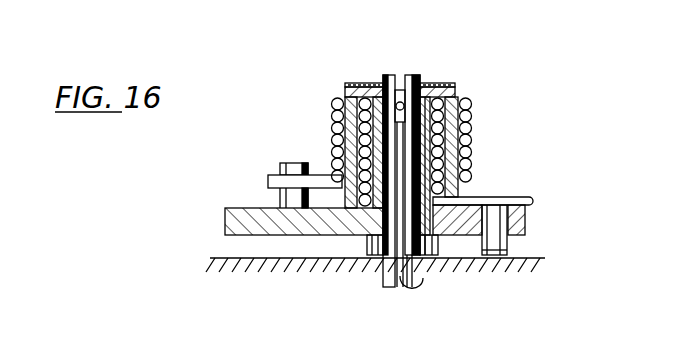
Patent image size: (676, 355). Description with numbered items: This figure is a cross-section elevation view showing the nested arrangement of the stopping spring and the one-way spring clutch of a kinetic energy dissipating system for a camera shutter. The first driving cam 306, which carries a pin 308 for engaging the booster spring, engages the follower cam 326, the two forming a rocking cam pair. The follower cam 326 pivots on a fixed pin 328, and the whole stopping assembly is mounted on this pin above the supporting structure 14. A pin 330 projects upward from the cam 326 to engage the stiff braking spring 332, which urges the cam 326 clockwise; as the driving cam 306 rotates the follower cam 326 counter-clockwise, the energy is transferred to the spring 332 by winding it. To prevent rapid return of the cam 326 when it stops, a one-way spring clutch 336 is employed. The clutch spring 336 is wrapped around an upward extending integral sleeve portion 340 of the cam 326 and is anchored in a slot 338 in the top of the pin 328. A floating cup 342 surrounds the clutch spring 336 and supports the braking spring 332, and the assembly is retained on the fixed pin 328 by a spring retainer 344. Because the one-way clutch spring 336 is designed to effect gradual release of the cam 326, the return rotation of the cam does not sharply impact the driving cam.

The panel 14 is at (222, 265).
The first driving cam 306 is at (523, 220).
The pin 308 is at (508, 240).
The follower cam 326 is at (237, 220).
The fixed pin 328 is at (413, 77).
The pin 330 is at (298, 163).
The stiff spring 332 is at (473, 103).
The one-way spring clutch 336 is at (487, 197).
The slot 338 is at (398, 75).
The sleeve portion 340 is at (345, 93).
The floating cup 342 is at (455, 86).
The spring retainer 344 is at (367, 83).